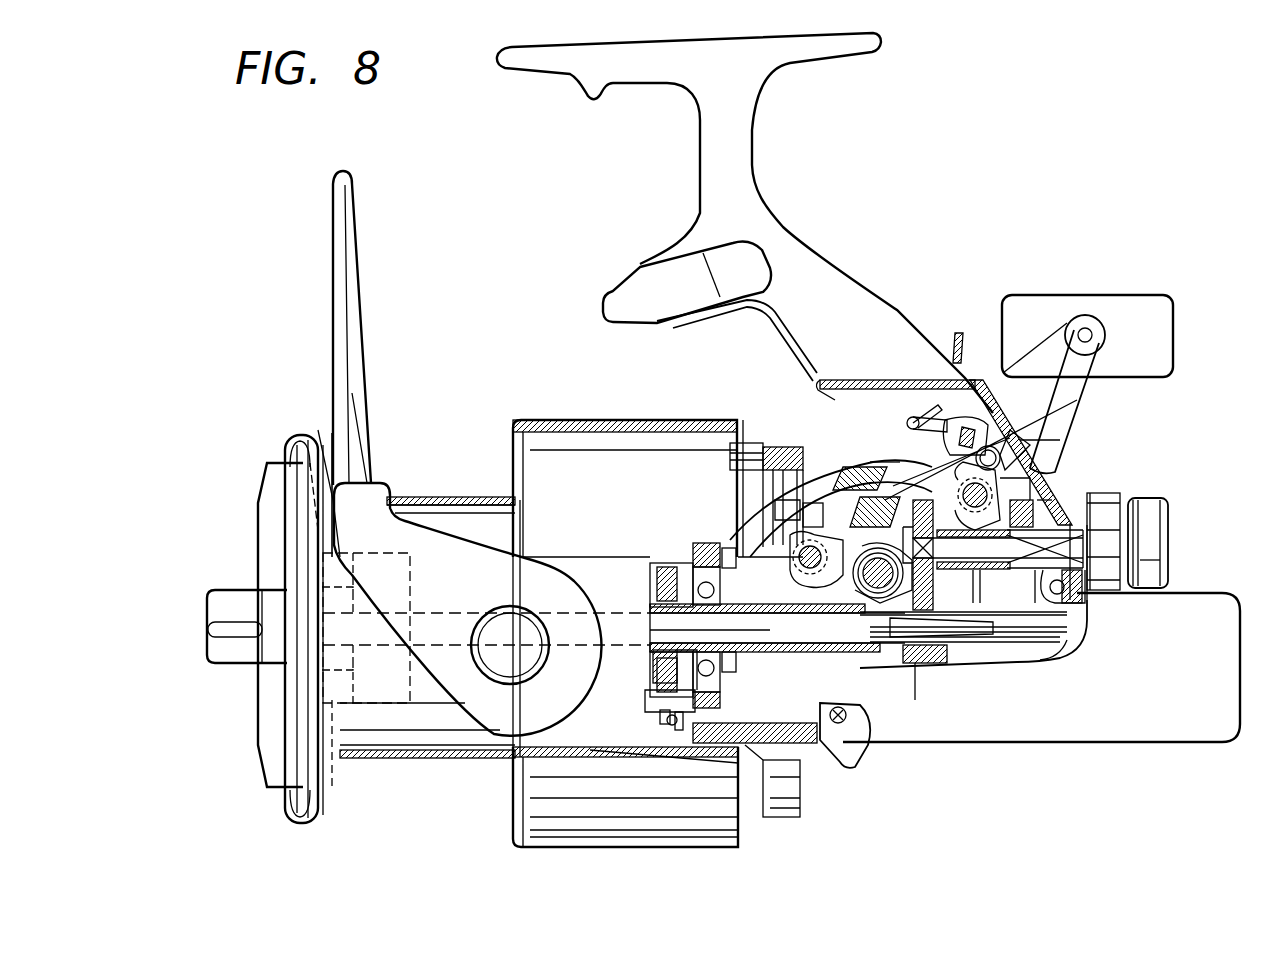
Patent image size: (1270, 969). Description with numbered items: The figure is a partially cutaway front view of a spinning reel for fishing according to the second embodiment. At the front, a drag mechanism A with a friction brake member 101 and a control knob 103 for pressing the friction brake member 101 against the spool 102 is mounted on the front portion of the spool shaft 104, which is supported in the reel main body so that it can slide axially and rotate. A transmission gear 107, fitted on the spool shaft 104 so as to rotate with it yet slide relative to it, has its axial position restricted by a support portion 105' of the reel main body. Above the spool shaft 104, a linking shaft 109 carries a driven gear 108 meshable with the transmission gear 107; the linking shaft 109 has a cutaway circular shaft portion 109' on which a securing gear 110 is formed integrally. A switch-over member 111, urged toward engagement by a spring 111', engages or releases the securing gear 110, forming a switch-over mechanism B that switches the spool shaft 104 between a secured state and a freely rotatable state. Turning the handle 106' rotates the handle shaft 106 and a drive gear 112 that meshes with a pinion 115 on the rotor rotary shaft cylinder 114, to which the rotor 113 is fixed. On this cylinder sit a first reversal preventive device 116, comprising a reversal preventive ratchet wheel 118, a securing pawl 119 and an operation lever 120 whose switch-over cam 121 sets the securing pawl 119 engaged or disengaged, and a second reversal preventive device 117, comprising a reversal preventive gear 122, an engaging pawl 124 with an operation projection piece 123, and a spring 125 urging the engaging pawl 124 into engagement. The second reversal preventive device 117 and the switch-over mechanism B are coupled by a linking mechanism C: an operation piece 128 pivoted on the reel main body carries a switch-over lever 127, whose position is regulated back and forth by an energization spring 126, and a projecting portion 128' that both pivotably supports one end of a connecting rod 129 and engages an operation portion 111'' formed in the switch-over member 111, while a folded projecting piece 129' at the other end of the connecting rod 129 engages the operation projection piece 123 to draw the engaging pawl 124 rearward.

The friction brake member 101 is at (396, 700).
The spool 102 is at (430, 508).
The control knob 103 is at (262, 532).
The spool shaft 104 is at (695, 560).
The support portion 105' is at (951, 584).
The handle shaft 106 is at (880, 625).
The handle 106' is at (1087, 357).
The transmission gear 107 is at (917, 685).
The driven gear 108 is at (952, 640).
The linking shaft 109 is at (999, 615).
The cutaway circular shaft portion 109' is at (1160, 541).
The securing gear 110 is at (1078, 632).
The switch-over member 111 is at (1039, 496).
The spring 111' is at (1080, 480).
The operation portion 111'' is at (1045, 447).
The drive gear 112 is at (987, 630).
The rotor 113 is at (758, 445).
The rotor rotary shaft cylinder 114 is at (727, 693).
The pinion 115 is at (767, 682).
The first reversal preventive device 116 is at (665, 717).
The second reversal preventive device 117 is at (730, 550).
The reversal preventive ratchet wheel 118 is at (653, 690).
The securing pawl 119 is at (672, 723).
The operation lever 120 is at (830, 745).
The switch-over cam 121 is at (674, 728).
The reversal preventive gear 122 is at (728, 570).
The operation projection piece 123 is at (820, 470).
The engaging pawl 124 is at (752, 500).
The spring 125 is at (848, 470).
The energization spring 126 is at (932, 402).
The switch-over lever 127 is at (958, 332).
The operation piece 128 is at (981, 379).
The projecting portion 128' is at (1069, 419).
The connecting rod 129 is at (918, 355).
The folded projecting piece 129' is at (792, 456).
The drag mechanism A is at (248, 693).
The switch-over mechanism B is at (1050, 498).
The linking mechanism C is at (884, 450).